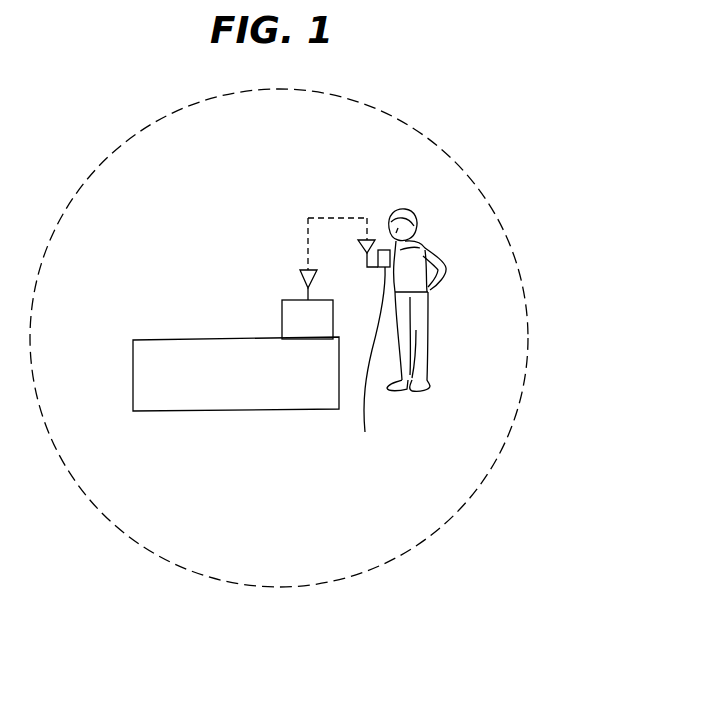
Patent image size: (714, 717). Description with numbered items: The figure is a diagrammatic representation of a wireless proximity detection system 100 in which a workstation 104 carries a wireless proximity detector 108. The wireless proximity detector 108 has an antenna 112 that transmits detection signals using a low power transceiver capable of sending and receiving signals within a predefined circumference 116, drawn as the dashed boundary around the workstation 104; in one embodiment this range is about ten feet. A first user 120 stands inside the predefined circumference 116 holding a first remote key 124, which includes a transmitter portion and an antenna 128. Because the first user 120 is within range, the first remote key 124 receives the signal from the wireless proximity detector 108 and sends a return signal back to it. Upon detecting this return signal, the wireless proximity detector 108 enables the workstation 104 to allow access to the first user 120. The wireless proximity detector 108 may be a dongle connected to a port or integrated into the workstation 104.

The wireless proximity detection system 100 is at (388, 97).
The workstation 104 is at (188, 340).
The wireless proximity detector 108 is at (282, 325).
The antenna 112 is at (304, 271).
The predefined circumference 116 is at (527, 338).
The first user 120 is at (430, 319).
The first remote key 124 is at (367, 367).
The antenna 128 is at (370, 242).